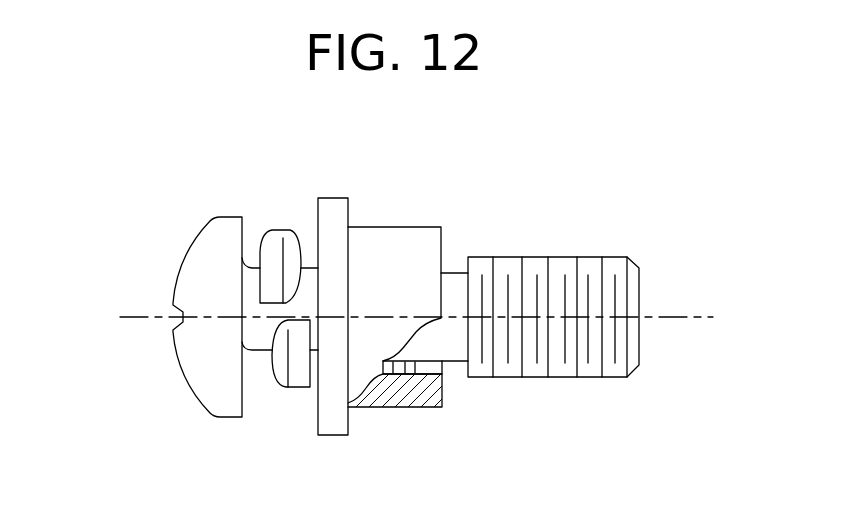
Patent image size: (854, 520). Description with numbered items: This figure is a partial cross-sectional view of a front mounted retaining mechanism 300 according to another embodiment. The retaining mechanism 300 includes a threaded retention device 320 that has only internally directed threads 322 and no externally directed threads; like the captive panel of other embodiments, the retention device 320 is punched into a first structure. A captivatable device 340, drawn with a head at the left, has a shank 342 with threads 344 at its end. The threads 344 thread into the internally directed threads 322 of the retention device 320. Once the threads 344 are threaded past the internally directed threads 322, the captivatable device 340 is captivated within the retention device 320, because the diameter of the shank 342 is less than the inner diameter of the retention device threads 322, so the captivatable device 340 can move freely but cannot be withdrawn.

The retaining mechanism 300 is at (208, 176).
The threaded retention device 320 is at (397, 235).
The internally directed threads 322 is at (422, 364).
The captivatable device 340 is at (199, 395).
The shank 342 is at (455, 353).
The threads 344 is at (612, 272).